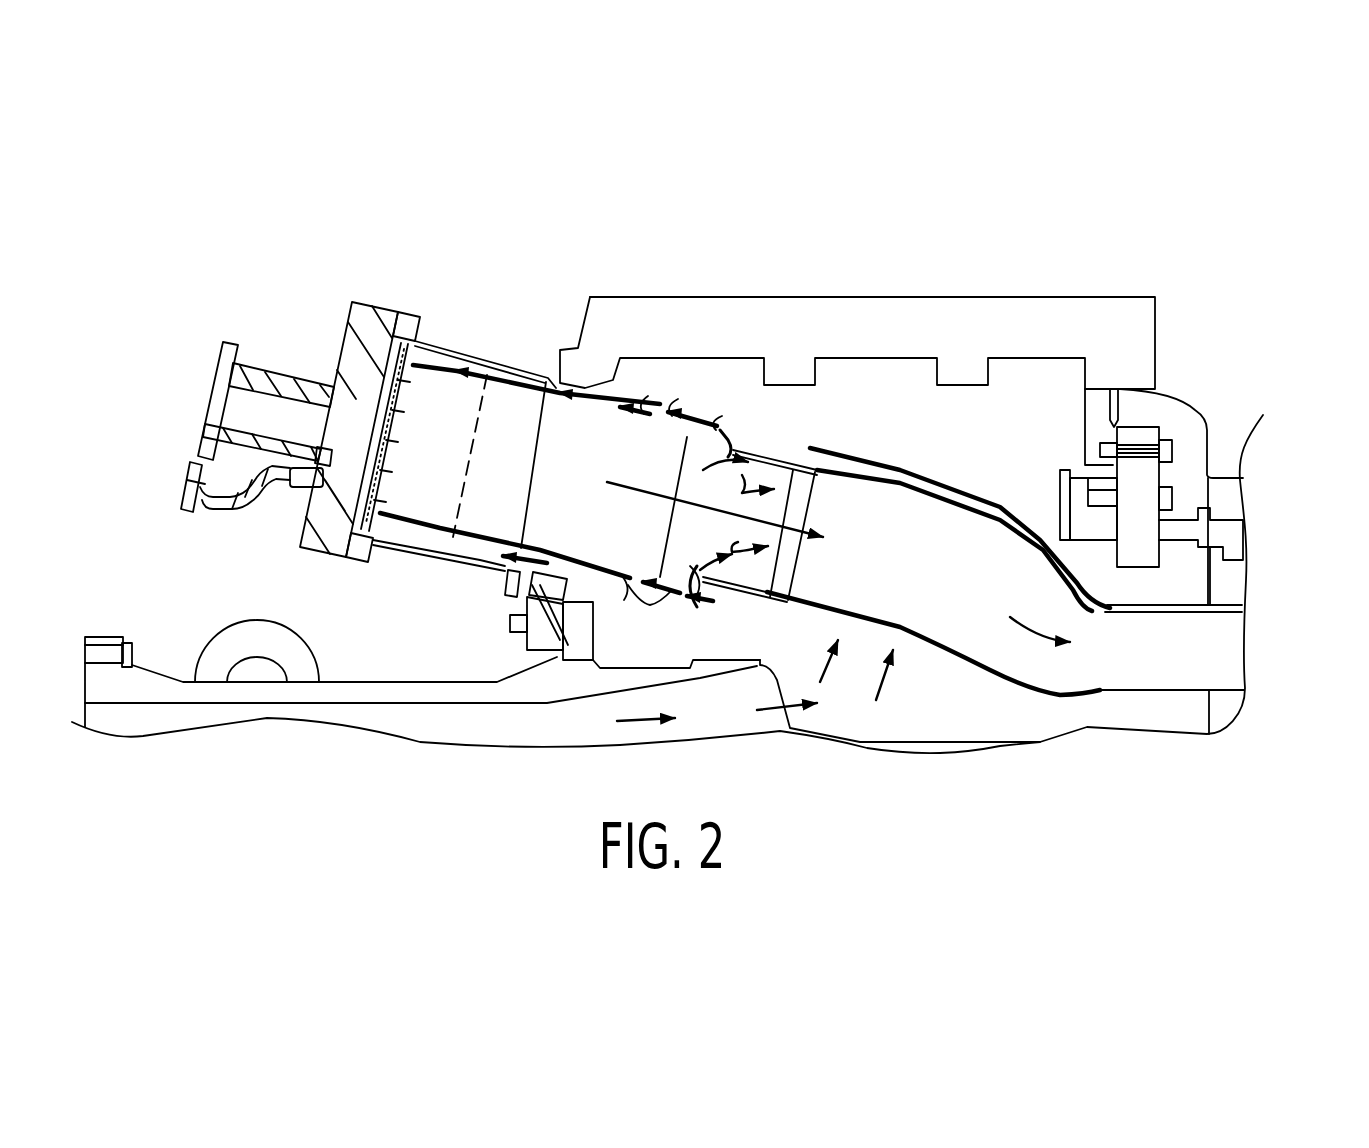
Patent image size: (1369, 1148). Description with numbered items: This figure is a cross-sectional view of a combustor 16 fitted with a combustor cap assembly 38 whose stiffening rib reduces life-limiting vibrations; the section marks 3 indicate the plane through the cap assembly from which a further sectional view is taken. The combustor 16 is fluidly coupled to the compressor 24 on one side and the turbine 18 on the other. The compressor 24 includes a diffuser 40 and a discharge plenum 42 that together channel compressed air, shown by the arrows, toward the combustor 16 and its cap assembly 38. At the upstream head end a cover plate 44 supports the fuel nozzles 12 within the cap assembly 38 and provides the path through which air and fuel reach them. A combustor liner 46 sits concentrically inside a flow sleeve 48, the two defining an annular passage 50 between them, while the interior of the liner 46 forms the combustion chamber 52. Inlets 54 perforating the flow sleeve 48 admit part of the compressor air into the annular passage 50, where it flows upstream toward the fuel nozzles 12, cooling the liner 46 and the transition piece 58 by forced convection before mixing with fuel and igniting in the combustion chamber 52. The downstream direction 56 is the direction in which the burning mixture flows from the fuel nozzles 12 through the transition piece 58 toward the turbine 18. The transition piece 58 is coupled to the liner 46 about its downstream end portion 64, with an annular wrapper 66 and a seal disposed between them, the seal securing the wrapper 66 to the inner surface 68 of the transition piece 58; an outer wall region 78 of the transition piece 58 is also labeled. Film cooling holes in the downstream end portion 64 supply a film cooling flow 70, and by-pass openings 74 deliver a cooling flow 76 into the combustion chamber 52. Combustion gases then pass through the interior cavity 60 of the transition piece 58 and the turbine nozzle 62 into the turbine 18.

The fuel nozzles 12 is at (428, 388).
The combustor 16 is at (800, 238).
The turbine 18 is at (1286, 724).
The compressor 24 is at (348, 674).
The combustor cap assembly 38 is at (400, 258).
The diffuser 40 is at (713, 723).
The discharge plenum 42 is at (1083, 727).
The cover plate 44 is at (368, 320).
The combustor liner 46 is at (422, 528).
The flow sleeve 48 is at (511, 352).
The annular passage 50 is at (538, 388).
The combustion chamber 52 is at (516, 478).
The inlets 54 is at (650, 605).
The downstream direction 56 is at (668, 500).
The transition piece 58 is at (930, 523).
The interior cavity 60 is at (942, 590).
The turbine nozzle 62 is at (1188, 658).
The downstream end portion 64 is at (765, 585).
The annular wrapper 66 is at (800, 478).
The inner surface 68 is at (988, 667).
The film cooling flow 70 is at (763, 535).
The by-pass openings 74 is at (692, 436).
The cooling flow 76 is at (700, 470).
The transition piece outer wall 78 is at (950, 652).
The section line 3- 3 is at (436, 448).